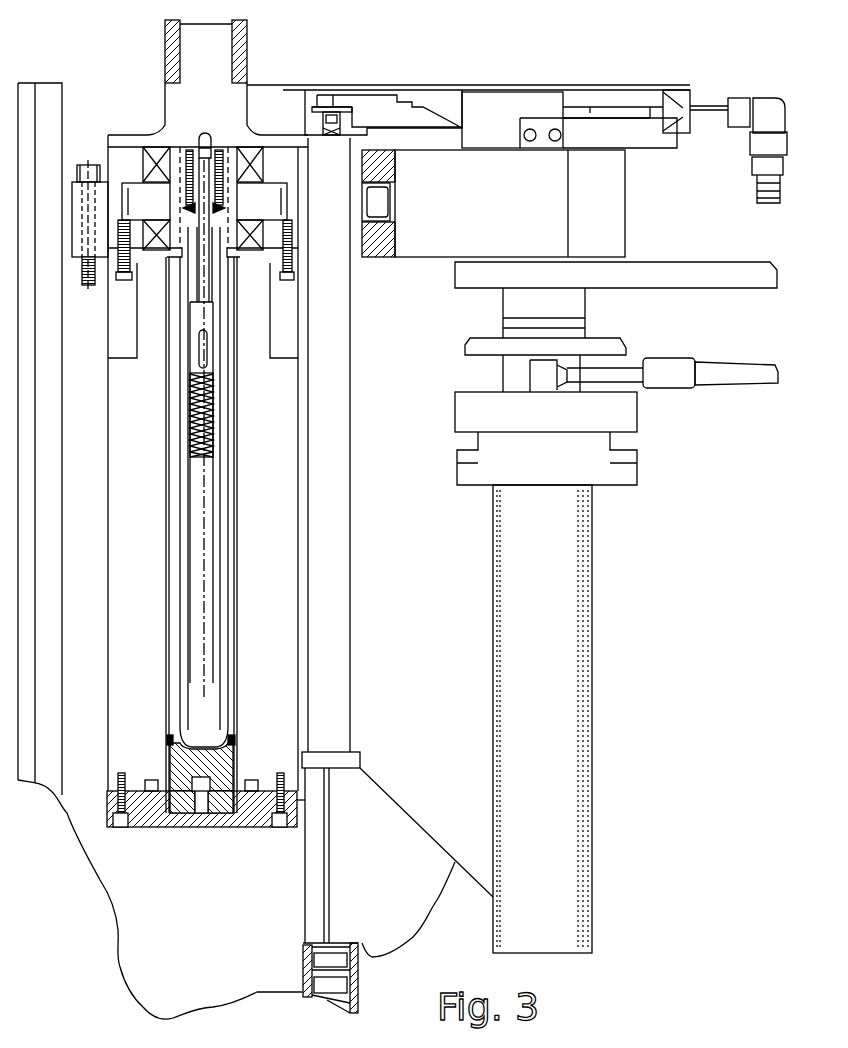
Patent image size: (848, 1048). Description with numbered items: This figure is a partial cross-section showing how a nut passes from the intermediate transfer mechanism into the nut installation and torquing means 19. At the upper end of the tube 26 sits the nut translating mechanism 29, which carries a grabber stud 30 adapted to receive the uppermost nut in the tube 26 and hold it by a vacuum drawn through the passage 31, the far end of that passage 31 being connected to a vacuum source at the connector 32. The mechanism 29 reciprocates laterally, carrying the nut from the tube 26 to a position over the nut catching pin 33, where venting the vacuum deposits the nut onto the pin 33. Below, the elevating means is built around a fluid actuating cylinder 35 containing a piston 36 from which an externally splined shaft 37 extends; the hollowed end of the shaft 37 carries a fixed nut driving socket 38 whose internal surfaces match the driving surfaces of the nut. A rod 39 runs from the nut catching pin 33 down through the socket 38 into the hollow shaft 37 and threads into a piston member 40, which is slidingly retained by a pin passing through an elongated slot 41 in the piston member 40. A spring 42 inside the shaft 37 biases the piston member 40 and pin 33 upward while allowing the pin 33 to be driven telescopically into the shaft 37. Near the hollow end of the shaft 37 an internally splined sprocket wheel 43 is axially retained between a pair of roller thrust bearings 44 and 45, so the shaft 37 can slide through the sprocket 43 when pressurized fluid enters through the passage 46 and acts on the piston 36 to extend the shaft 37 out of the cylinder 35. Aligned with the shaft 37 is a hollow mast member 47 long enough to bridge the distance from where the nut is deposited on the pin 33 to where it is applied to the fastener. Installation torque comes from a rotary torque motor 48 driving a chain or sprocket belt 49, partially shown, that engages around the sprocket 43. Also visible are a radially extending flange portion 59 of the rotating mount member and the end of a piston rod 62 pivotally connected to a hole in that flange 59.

The nut installation and torquing means 19 is at (128, 85).
The hollow mast member 47 is at (245, 38).
The nut catching pin 33 is at (203, 134).
The nut driving socket 38 is at (219, 152).
The roller thrust bearing 44 is at (145, 167).
The sprocket wheel 43 is at (128, 200).
The rod 39 is at (207, 284).
The roller thrust bearing 45 is at (263, 238).
The grabber stud 30 is at (325, 124).
The passage 31 is at (363, 100).
The nut translating mechanism 29 is at (452, 88).
The chain or sprocket belt 49 is at (377, 193).
The connector 32 is at (742, 187).
The tube 26 is at (352, 334).
The flange portion 59 is at (455, 417).
The piston rod 62 is at (737, 386).
The fluid actuating cylinder 35 is at (270, 596).
The externally splined shaft 37 is at (227, 563).
The piston member 40 is at (197, 326).
The elongated slot 41 is at (207, 352).
The spring 42 is at (213, 435).
The passage 46 is at (152, 777).
The piston 36 is at (222, 757).
The rotary torque motor 48 is at (605, 639).